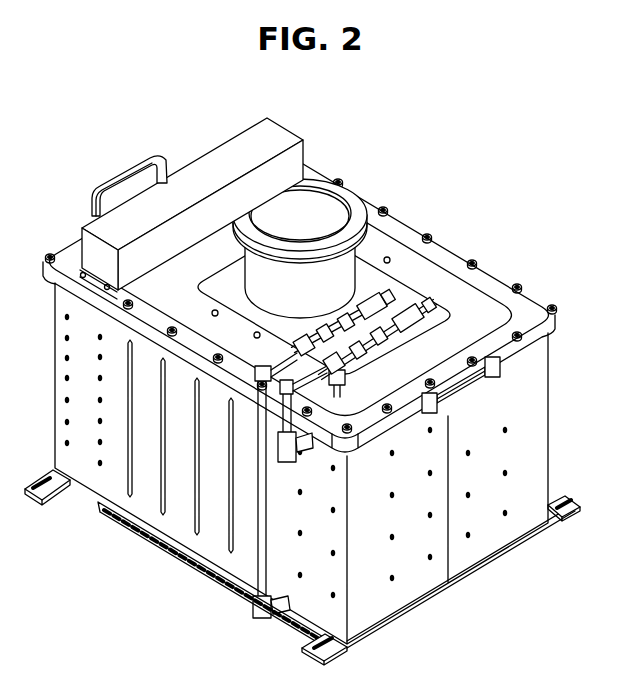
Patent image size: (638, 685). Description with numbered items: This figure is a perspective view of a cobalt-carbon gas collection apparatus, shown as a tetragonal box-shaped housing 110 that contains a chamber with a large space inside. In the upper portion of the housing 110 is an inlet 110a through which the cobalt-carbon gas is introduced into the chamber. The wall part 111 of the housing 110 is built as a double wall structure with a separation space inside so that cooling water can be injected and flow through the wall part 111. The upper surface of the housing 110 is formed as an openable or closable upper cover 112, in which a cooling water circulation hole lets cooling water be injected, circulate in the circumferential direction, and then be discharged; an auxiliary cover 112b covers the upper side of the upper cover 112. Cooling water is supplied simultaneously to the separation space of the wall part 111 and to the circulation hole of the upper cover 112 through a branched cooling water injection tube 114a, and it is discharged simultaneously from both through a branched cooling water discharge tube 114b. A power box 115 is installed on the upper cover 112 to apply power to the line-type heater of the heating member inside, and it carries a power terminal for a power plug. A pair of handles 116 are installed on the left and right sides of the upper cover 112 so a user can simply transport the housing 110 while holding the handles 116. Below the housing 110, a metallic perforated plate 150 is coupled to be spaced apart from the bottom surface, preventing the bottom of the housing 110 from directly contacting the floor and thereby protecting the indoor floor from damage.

The housing 110 is at (326, 363).
The inlet 110a is at (330, 200).
The wall part 111 is at (543, 484).
The upper cover 112 is at (300, 295).
The auxiliary cover 112b is at (507, 307).
The branched cooling water injection tube 114a is at (410, 313).
The branched cooling water discharge tube 114b is at (378, 297).
The power box 115 is at (266, 128).
The handles 116 is at (124, 178).
The metallic perforated plate 150 is at (193, 567).